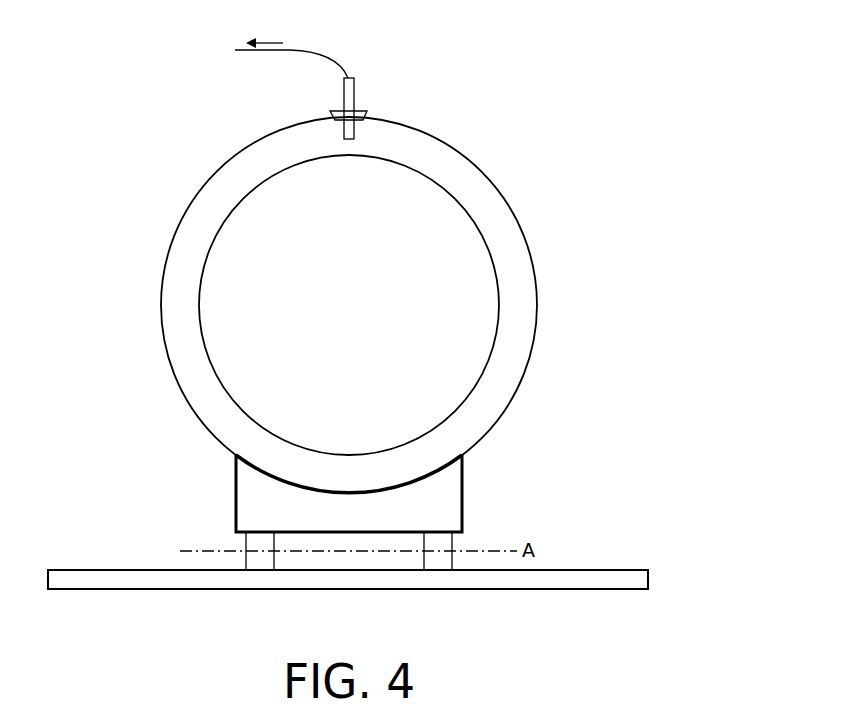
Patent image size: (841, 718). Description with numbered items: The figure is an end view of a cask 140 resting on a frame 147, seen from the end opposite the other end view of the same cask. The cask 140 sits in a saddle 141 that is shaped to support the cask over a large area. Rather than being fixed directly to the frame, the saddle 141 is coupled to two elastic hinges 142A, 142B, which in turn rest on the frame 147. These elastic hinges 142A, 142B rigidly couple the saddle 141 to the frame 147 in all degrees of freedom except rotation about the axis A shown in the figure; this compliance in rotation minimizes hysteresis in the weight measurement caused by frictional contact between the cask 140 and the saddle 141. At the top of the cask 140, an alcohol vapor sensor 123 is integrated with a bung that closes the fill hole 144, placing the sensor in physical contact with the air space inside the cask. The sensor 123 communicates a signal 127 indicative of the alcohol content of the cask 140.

The alcohol vapor sensor 123 is at (343, 100).
The signal 127 is at (268, 43).
The cask 140 is at (533, 259).
The saddle 141 is at (366, 523).
The elastic hinge 142A is at (244, 540).
The elastic hinge 142B is at (454, 540).
The fill hole 144 is at (357, 110).
The frame 147 is at (595, 589).